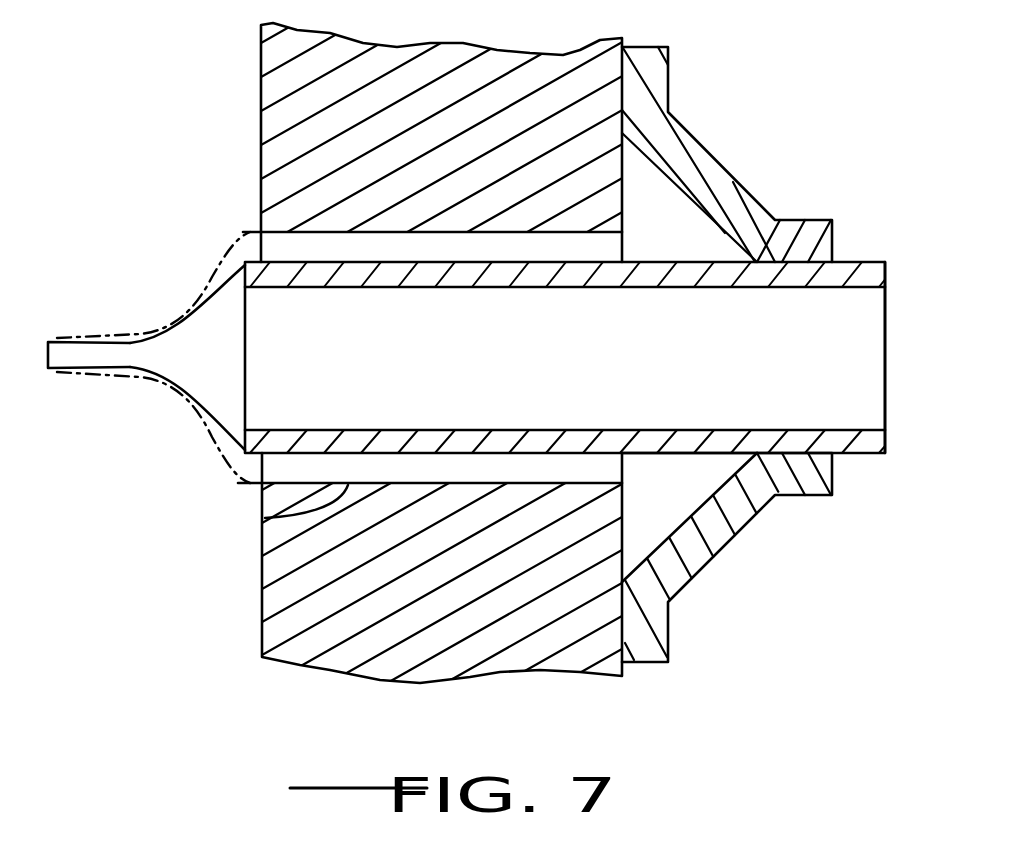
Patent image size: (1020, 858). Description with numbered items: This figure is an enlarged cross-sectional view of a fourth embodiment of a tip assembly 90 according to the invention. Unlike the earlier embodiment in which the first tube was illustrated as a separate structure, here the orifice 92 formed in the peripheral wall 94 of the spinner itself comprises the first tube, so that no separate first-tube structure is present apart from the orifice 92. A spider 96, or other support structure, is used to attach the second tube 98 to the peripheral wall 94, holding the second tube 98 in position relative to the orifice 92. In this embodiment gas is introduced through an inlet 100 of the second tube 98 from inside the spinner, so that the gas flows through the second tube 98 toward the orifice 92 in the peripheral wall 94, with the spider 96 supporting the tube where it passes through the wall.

The tip assembly 90 is at (207, 193).
The orifice 92 is at (262, 519).
The peripheral wall 94 is at (312, 640).
The spider 96 is at (707, 180).
The second tube 98 is at (467, 277).
The inlet 100 is at (885, 393).